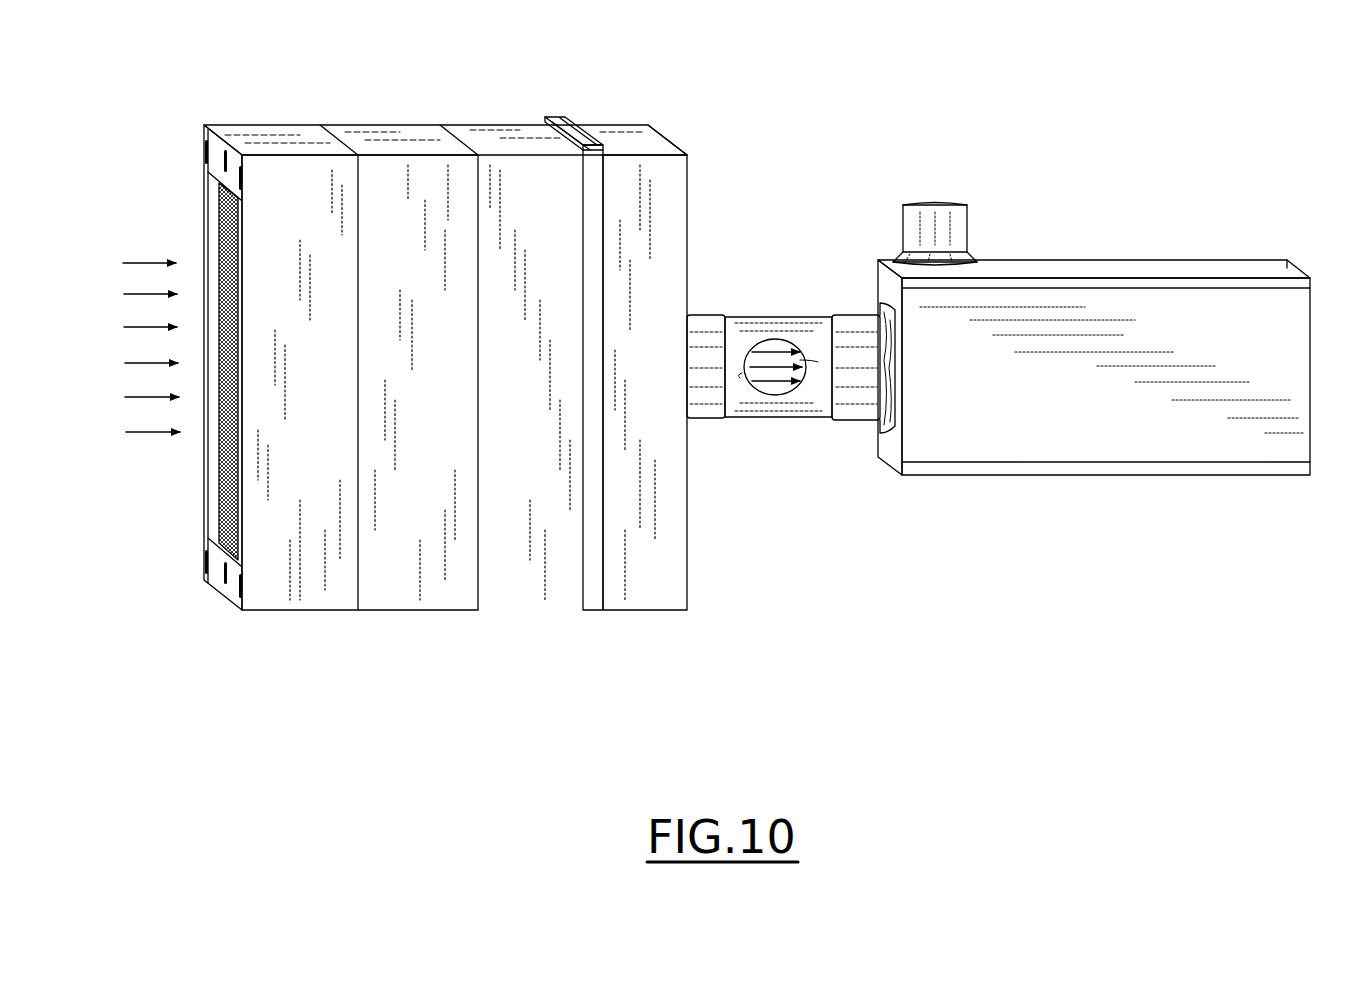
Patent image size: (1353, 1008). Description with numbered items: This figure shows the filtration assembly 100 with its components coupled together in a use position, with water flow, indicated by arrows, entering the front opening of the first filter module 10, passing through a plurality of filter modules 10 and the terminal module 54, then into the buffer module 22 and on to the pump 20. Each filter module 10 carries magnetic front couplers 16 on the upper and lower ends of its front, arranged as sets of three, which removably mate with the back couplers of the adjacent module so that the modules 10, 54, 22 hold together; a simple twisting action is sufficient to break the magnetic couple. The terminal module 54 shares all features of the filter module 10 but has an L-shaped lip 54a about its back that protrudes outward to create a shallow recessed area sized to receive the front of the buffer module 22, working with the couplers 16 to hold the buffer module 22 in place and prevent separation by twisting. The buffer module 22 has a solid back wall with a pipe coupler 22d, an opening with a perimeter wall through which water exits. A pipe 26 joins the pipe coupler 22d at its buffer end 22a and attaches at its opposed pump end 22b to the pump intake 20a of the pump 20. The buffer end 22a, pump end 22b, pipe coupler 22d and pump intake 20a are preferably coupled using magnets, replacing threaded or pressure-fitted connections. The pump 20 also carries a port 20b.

The assembly 100 is at (452, 722).
The front couplers 16 is at (224, 155).
The filter module 10 is at (322, 600).
The buffer module 22 is at (665, 215).
The terminal module 54 is at (530, 592).
The lip 54a is at (546, 118).
The buffer end 22a is at (730, 316).
The pipe coupler 22d is at (707, 395).
The pump end 22b is at (828, 420).
The pipe 26 is at (740, 420).
The pump intake 20a is at (858, 332).
The pump 20 is at (1130, 307).
The tank outlet spout 20b is at (952, 222).